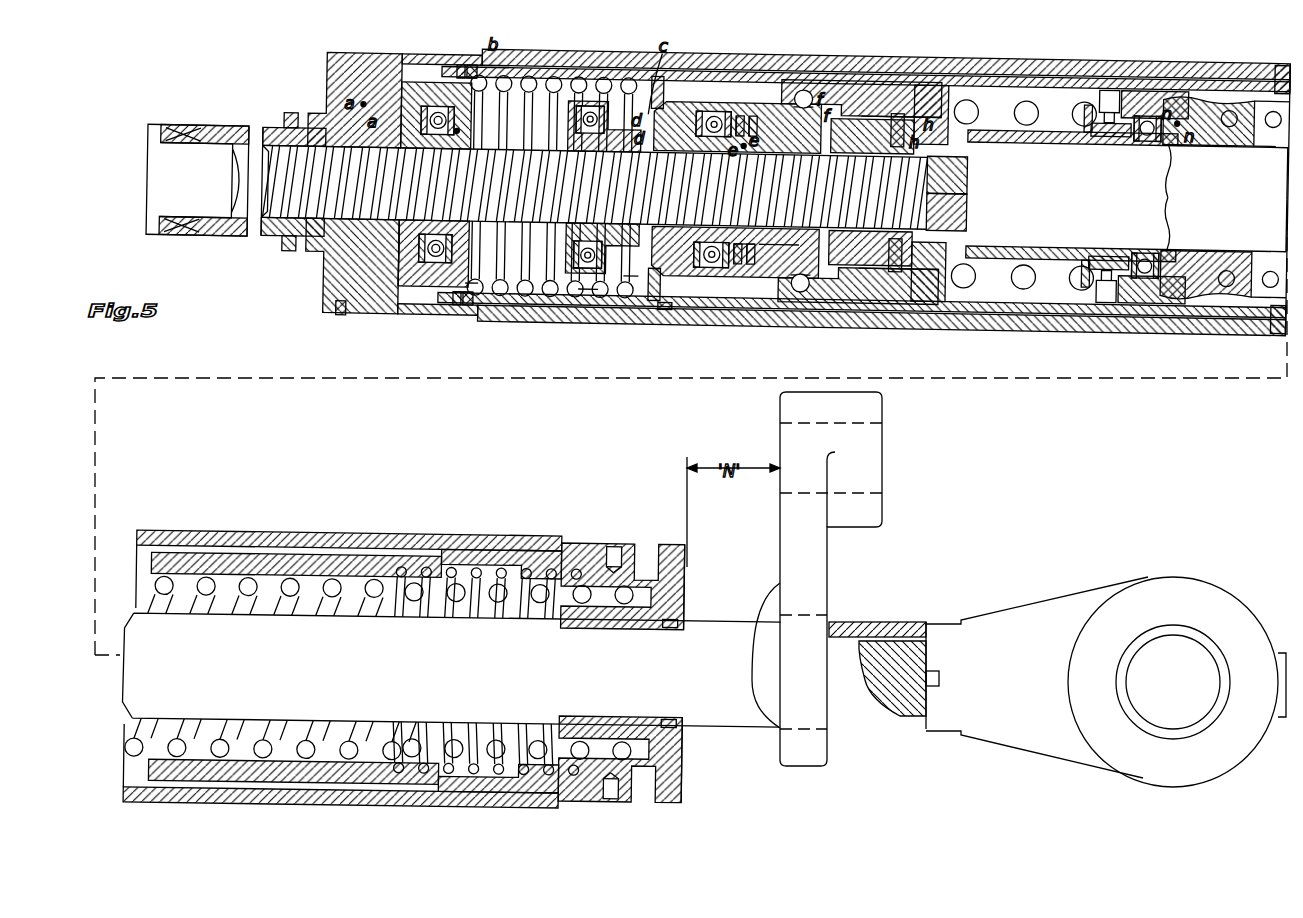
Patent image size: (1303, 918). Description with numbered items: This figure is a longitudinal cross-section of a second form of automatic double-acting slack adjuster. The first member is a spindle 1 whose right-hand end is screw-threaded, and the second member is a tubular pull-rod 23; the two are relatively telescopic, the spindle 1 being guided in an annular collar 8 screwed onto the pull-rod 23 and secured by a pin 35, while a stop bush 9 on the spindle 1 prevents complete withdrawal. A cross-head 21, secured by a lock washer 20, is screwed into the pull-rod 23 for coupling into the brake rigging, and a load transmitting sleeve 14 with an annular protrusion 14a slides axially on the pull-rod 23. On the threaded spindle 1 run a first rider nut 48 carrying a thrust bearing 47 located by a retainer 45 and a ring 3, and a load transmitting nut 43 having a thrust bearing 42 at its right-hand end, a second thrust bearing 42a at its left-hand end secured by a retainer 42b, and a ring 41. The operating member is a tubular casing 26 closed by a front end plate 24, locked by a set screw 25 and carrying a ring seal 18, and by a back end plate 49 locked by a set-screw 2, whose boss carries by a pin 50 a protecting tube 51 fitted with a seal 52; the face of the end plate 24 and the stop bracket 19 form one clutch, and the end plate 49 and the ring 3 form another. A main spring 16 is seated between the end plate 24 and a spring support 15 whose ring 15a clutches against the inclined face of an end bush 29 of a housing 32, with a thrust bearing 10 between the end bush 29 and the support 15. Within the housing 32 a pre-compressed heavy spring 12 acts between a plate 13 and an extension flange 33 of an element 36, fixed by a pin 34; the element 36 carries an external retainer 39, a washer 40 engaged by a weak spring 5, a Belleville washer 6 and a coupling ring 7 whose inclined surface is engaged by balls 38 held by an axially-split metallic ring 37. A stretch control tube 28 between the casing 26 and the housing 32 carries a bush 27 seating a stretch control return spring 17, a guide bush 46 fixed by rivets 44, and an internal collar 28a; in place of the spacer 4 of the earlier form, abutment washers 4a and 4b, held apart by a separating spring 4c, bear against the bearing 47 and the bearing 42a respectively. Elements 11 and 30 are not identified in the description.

The spindle 1 is at (210, 203).
The set-screw 2 is at (343, 316).
The ring 3 is at (360, 254).
The spacer 4 is at (470, 300).
The abutment washer 4a is at (471, 302).
The abutment washer 4b is at (633, 276).
The separating spring 4c is at (585, 286).
The weak spring 5 is at (748, 262).
The Belleville washer 6 is at (772, 265).
The coupling ring 7 is at (788, 265).
The annular collar 8 is at (850, 262).
The stop bush 9 is at (950, 221).
The thrust bearing 10 is at (1143, 268).
The tubular shaft 11 is at (968, 241).
The heavy spring 12 is at (1010, 290).
The plate 13 is at (1090, 266).
The load transmitting sleeve 14 is at (1098, 268).
The annular protrusion 14a is at (1110, 272).
The spring support 15 is at (1215, 284).
The ring 15a is at (1178, 284).
The main spring 16 is at (297, 756).
The stretch control return spring 17 is at (465, 768).
The ring seal 18 is at (665, 738).
The stop bracket 19 is at (797, 767).
The lock washer 20 is at (928, 730).
The cross-head 21 is at (1040, 738).
The tubular pull-rod 23 is at (738, 620).
The front end plate 24 is at (667, 540).
The set screw 25 is at (622, 538).
The tubular casing 26 is at (508, 540).
The bush 27 is at (352, 556).
The stretch control tube 28 is at (1257, 82).
The collar 28a is at (665, 300).
The end bush 29 is at (1150, 100).
The screw 30 is at (1110, 94).
The housing 32 is at (1045, 84).
The extension flange 33 is at (985, 64).
The pin 34 is at (941, 117).
The pin 35 is at (906, 114).
The element 36 is at (880, 109).
The axially-split metallic ring 37 is at (836, 104).
The balls 38 is at (804, 86).
The external retainer 39 is at (790, 125).
The washer 40 is at (768, 124).
The ring 41 is at (745, 117).
The thrust bearing 42 is at (712, 111).
The second thrust bearing 42a is at (591, 117).
The retainer 42b is at (575, 130).
The load transmitting nut 43 is at (636, 120).
The rivets 44 is at (460, 73).
The retainer 45 is at (472, 126).
The guide bush 46 is at (438, 66).
The thrust bearing 47 is at (436, 106).
The first rider nut 48 is at (386, 112).
The back end plate 49 is at (335, 52).
The pin 50 is at (292, 111).
The protecting tube 51 is at (270, 128).
The seal 52 is at (174, 133).